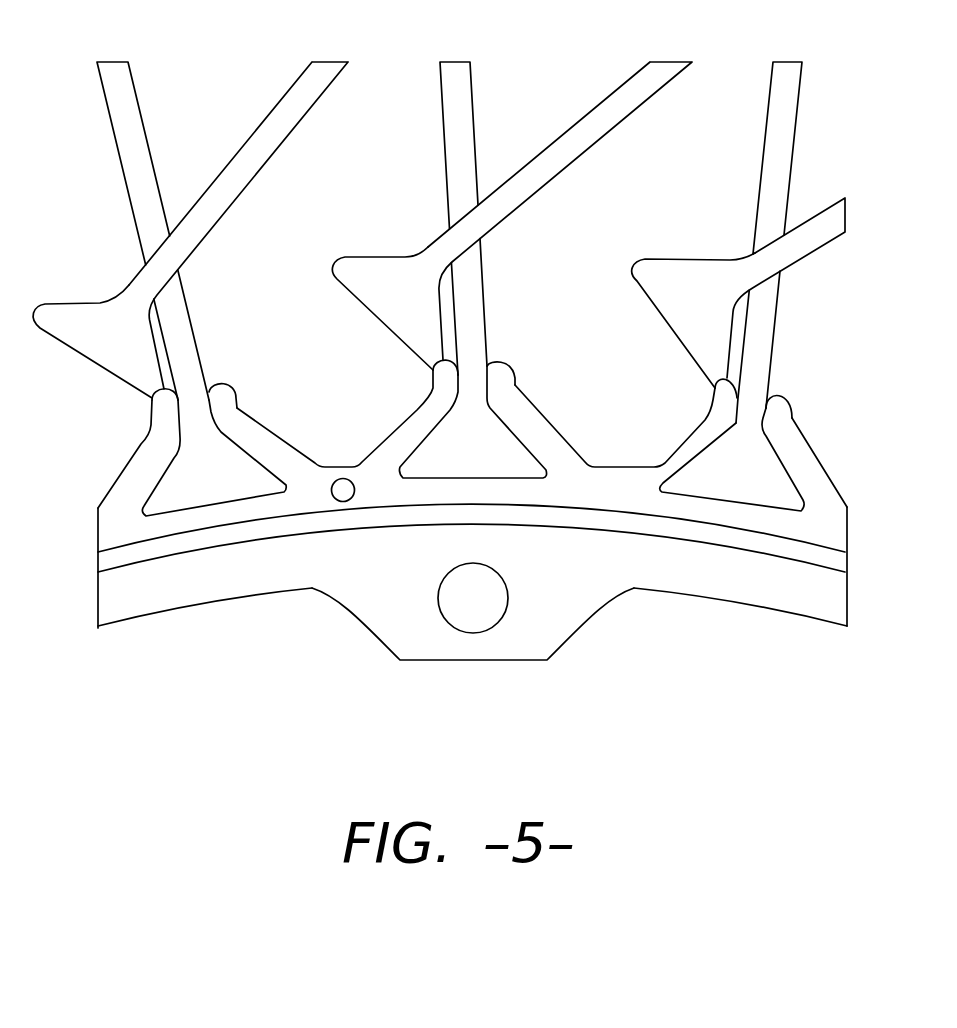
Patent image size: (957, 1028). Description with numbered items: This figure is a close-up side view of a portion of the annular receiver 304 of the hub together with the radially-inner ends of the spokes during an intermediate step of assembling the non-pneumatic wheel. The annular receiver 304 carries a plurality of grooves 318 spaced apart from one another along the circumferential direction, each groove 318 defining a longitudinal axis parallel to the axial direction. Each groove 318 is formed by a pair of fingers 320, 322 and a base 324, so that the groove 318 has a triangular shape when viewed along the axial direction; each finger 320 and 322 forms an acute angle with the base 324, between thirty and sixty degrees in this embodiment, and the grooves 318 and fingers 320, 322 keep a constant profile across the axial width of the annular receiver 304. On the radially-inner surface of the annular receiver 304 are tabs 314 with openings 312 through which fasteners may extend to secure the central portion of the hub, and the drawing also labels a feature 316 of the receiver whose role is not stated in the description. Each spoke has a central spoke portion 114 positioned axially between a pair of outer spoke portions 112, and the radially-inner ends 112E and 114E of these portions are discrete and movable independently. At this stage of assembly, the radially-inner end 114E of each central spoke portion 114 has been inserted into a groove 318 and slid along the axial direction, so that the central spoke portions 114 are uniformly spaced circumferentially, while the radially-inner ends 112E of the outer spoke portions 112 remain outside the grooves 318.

The outer spoke portion 112 is at (297, 97).
The central spoke portion 114 is at (123, 85).
The radially-inner end of outer spoke portion 112E is at (682, 283).
The radially-inner end of central spoke portion 114E is at (220, 455).
The annular receiver 304 is at (808, 597).
The opening 312 is at (470, 598).
The tab 314 is at (567, 607).
The side end face 316 is at (143, 623).
The groove 318 is at (200, 507).
The finger 320 is at (688, 440).
The finger 322 is at (810, 478).
The base 324 is at (777, 523).